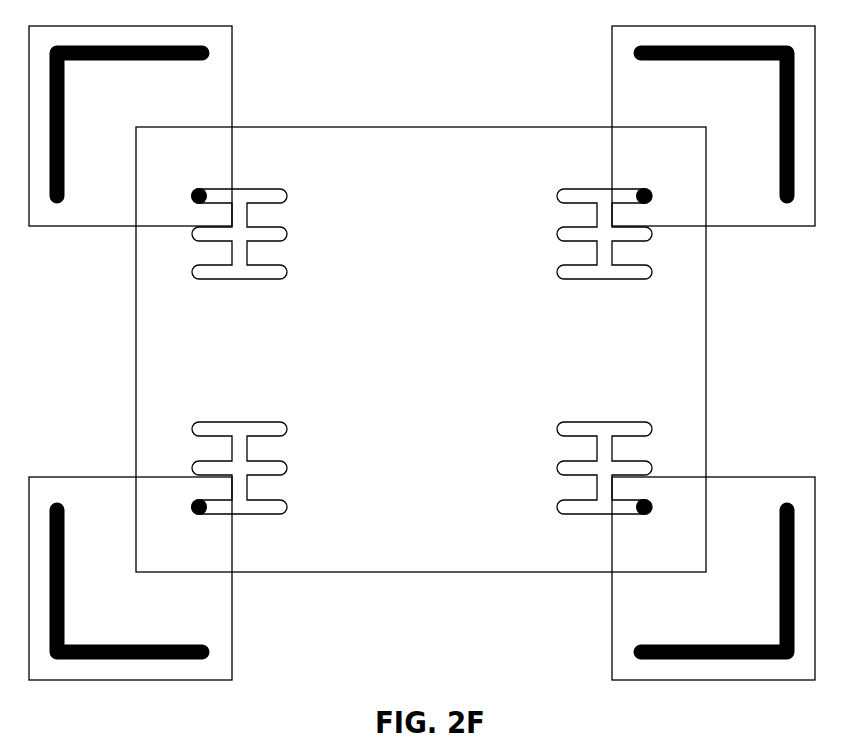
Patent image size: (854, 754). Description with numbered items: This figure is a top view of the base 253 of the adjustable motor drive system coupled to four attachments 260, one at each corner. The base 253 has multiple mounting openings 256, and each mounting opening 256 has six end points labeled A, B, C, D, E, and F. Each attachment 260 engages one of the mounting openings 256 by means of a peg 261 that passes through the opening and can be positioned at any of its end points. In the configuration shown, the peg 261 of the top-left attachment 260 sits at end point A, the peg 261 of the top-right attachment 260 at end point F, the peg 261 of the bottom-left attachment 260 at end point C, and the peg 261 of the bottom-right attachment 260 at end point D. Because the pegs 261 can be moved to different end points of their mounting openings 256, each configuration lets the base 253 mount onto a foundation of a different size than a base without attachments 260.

The base 253 is at (706, 373).
The mounting opening 256 is at (272, 280).
The attachment 260 is at (232, 78).
The peg 261 is at (205, 192).